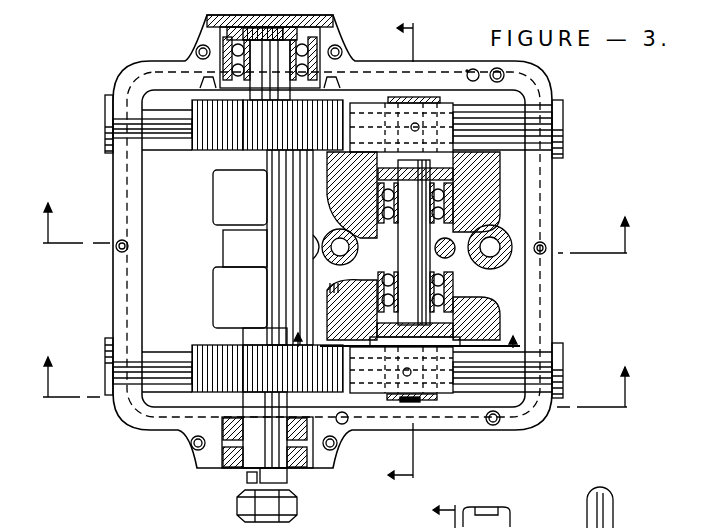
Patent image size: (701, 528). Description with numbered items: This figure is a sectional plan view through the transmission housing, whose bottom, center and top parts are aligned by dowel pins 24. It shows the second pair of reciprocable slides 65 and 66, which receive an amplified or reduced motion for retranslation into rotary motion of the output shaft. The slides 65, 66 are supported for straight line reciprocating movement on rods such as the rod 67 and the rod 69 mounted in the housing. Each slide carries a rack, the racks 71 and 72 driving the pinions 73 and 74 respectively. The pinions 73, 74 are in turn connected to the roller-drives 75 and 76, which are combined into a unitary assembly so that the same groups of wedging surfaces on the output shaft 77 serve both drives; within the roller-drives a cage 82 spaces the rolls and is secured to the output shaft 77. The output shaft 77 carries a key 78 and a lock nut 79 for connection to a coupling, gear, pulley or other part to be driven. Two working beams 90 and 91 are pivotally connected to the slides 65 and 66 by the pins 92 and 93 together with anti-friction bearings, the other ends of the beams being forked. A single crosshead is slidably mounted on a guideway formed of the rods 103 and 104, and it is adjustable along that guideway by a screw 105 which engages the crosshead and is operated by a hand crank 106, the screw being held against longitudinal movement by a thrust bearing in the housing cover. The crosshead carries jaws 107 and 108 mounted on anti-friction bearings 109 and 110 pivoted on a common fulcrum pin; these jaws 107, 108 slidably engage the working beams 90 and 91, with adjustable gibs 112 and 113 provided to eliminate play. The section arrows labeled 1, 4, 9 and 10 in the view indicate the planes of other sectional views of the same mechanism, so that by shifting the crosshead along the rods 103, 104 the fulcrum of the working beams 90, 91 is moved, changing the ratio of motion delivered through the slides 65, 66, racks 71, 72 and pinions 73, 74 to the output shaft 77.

The section line 1 is at (337, 372).
The section line 4 is at (336, 218).
The section line 9 is at (440, 274).
The section line 10 is at (410, 334).
The dowel pins 24 is at (468, 71).
The reciprocable slide 65 is at (384, 371).
The reciprocable slide 66 is at (384, 128).
The rod 67 is at (162, 120).
The rod 69 is at (162, 363).
The rack 71 is at (212, 128).
The rack 72 is at (202, 347).
The pinion 73 is at (263, 118).
The pinion 74 is at (258, 350).
The roller-drive 75 is at (256, 201).
The roller-drive 76 is at (256, 296).
The output shaft 77 is at (260, 480).
The key 78 is at (247, 473).
The lock nut 79 is at (297, 512).
The cage 82 is at (237, 258).
The working beam 90 is at (468, 200).
The working beam 91 is at (477, 310).
The pin 92 is at (415, 127).
The pin 93 is at (407, 373).
The rod 103 is at (320, 247).
The rod 104 is at (470, 222).
The screw 105 is at (477, 284).
The hand crank 106 is at (593, 505).
The jaw 107 is at (465, 163).
The jaw 108 is at (480, 320).
The anti-friction bearing 109 is at (478, 226).
The anti-friction bearing 110 is at (487, 302).
The adjustable gib 112 is at (483, 150).
The adjustable gib 113 is at (453, 353).